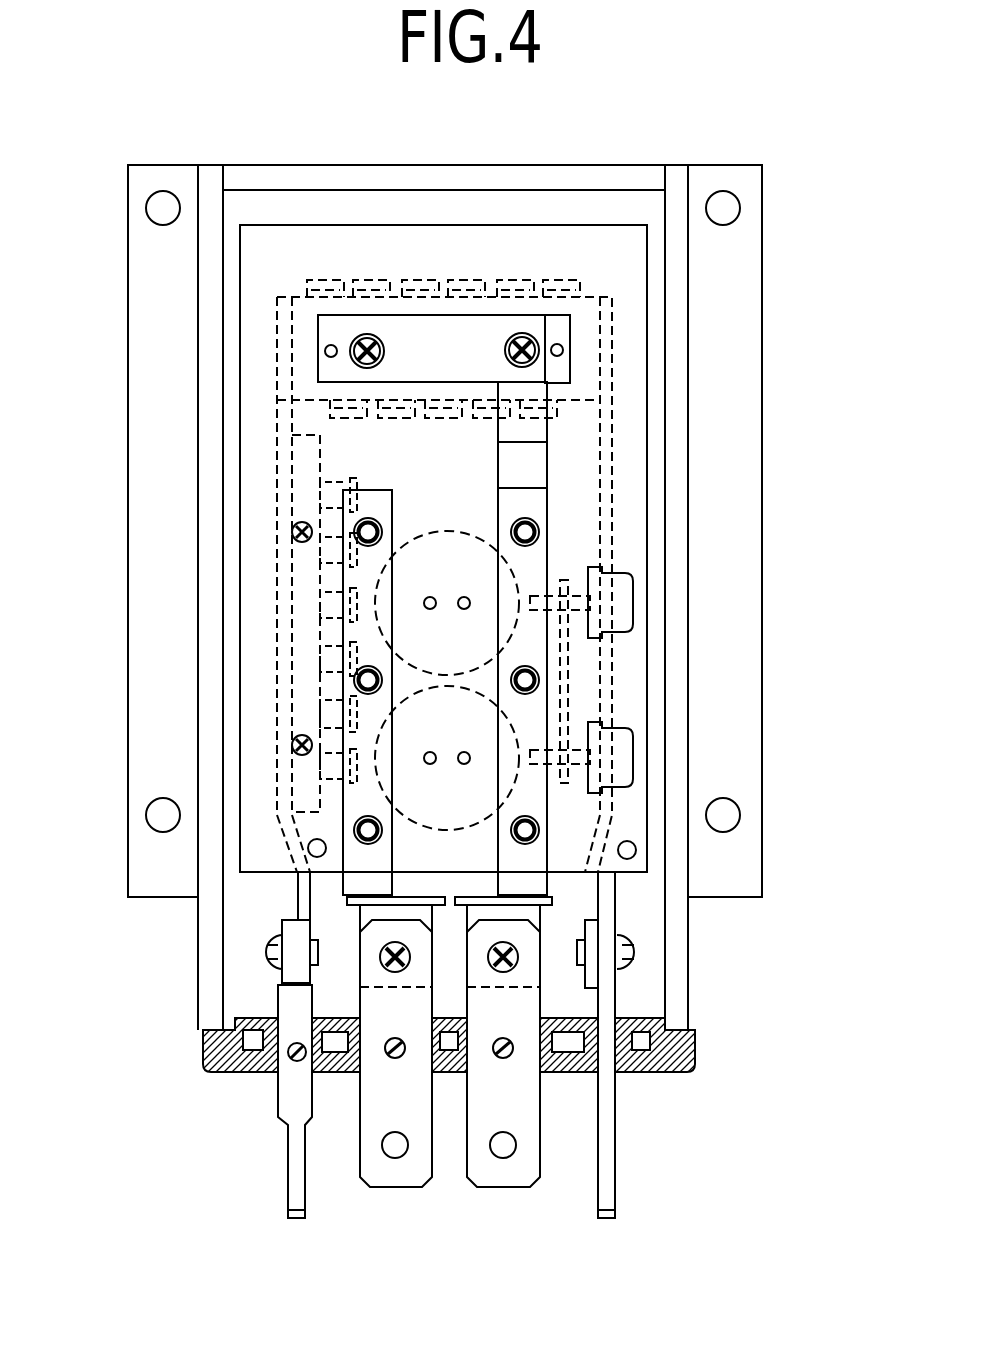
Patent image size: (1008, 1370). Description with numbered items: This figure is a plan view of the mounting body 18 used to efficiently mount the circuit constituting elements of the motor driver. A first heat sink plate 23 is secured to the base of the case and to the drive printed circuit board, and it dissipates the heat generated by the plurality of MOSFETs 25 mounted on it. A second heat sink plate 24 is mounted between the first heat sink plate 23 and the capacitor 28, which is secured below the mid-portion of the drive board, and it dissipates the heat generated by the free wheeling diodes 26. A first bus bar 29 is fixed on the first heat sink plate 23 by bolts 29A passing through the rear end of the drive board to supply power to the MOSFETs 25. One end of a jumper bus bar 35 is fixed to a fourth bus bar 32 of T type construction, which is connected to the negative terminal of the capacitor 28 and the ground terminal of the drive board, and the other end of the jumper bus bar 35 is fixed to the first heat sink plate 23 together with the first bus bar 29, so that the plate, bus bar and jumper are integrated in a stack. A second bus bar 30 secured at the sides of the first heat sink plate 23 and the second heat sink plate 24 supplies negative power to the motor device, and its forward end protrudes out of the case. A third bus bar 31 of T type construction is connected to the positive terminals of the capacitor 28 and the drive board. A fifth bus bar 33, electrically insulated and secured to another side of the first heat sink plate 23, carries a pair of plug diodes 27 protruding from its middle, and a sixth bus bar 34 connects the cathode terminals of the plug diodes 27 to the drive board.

The mounting body 18 is at (767, 136).
The first heat sink plate 23 is at (303, 362).
The second heat sink plate 24 is at (303, 697).
The MOSFETs 25 is at (515, 280).
The free wheeling diodes 26 is at (333, 495).
The plug diodes 27 is at (620, 603).
The capacitor 28 is at (408, 790).
The first bus bar 29 is at (348, 375).
The bolts 29A is at (355, 345).
The second bus bar 30 is at (305, 1198).
The third bus bar 31 is at (400, 1182).
The fourth bus bar 32 is at (520, 1182).
The fifth bus bar 33 is at (618, 1198).
The sixth bus bar 34 is at (567, 685).
The jumper bus bar 35 is at (537, 465).